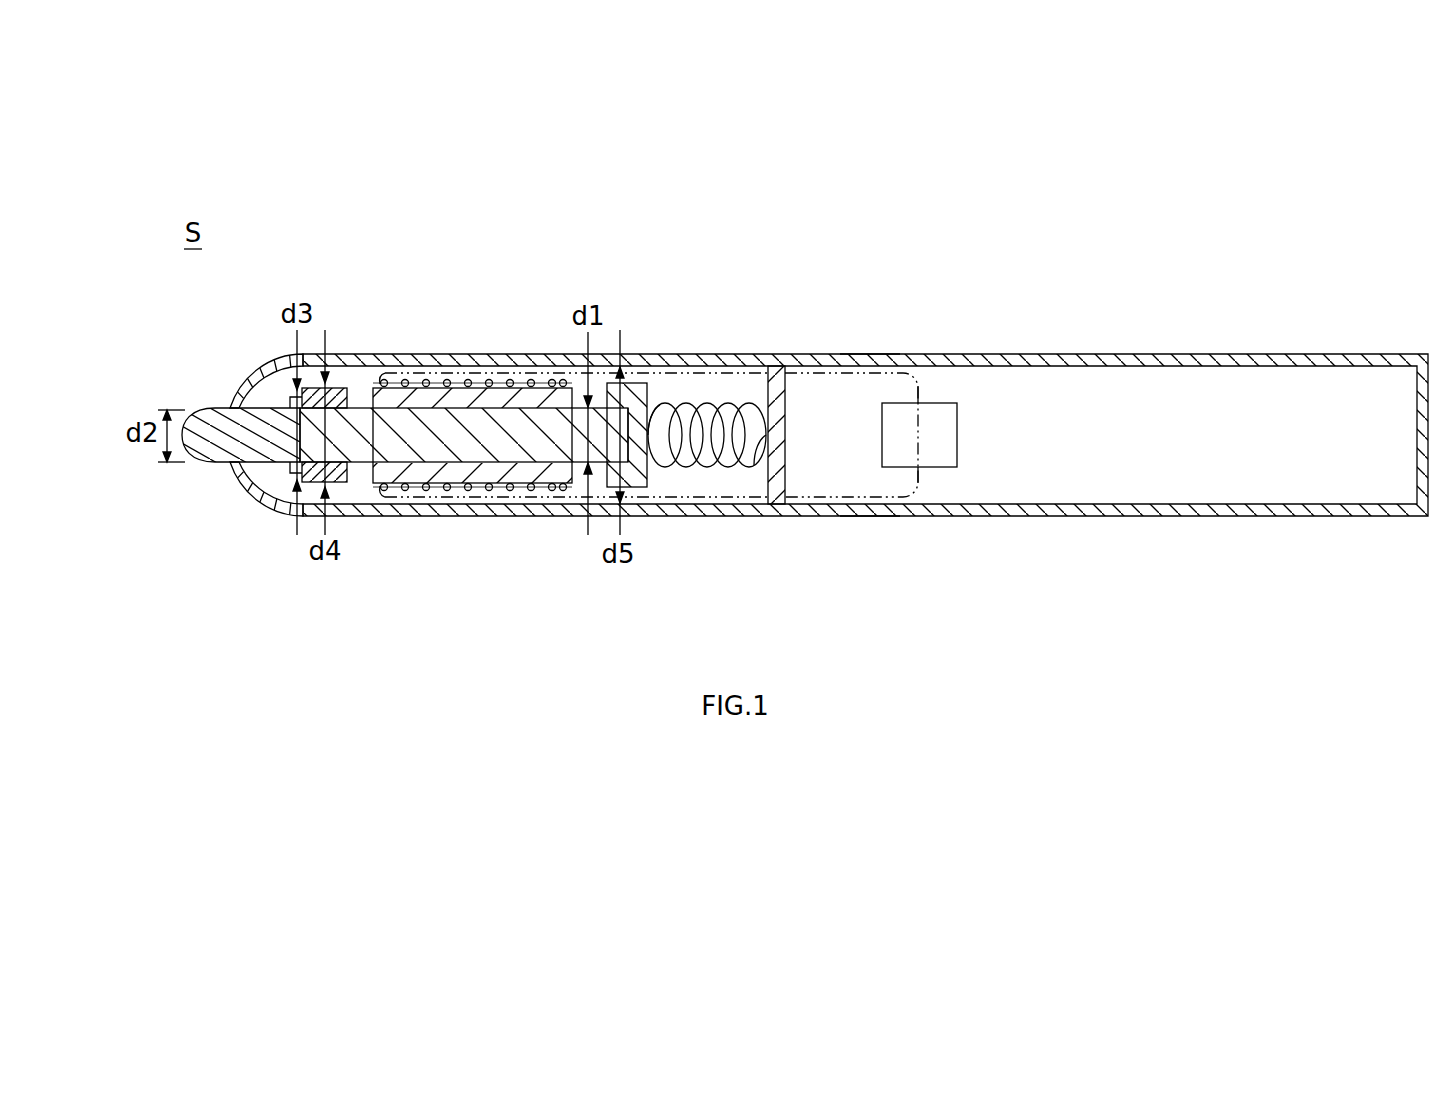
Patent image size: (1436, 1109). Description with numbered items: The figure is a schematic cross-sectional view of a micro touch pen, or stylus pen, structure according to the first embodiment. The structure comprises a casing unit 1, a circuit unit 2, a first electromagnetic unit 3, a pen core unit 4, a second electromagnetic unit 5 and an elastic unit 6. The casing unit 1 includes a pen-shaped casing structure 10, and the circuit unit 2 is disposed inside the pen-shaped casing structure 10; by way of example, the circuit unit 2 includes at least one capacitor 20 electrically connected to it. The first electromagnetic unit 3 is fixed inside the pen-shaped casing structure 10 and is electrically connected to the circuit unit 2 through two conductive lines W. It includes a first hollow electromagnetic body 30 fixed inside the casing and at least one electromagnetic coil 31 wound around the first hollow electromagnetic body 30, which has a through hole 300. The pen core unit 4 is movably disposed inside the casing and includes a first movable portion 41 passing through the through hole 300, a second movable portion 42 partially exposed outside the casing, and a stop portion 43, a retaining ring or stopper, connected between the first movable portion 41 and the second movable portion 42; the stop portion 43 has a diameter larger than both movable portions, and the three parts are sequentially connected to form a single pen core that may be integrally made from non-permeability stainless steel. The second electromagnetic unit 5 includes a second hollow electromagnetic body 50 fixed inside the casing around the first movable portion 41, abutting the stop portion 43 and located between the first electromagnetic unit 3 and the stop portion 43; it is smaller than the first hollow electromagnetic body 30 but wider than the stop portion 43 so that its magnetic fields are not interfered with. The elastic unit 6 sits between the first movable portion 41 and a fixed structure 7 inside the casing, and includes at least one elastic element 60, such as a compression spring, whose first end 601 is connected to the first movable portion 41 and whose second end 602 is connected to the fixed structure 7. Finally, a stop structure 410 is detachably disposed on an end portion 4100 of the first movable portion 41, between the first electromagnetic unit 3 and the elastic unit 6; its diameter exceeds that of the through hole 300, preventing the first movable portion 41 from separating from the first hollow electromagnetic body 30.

The casing unit 1 is at (1228, 272).
The pen-shaped casing structure 10 is at (1212, 362).
The circuit unit 2 is at (727, 435).
The capacitor 20 is at (1010, 433).
The first electromagnetic unit 3 is at (472, 280).
The first hollow electromagnetic body 30 is at (465, 393).
The electromagnetic coil 31 is at (517, 388).
The through hole 300 is at (396, 381).
The pen core unit 4 is at (188, 590).
The first movable portion 41 is at (285, 452).
The second movable portion 42 is at (253, 437).
The stop portion 43 is at (296, 474).
The stop structure 410 is at (641, 395).
The end portion 4100 is at (613, 442).
The second electromagnetic unit 5 is at (340, 280).
The second hollow electromagnetic body 50 is at (336, 388).
The elastic unit 6 is at (720, 280).
The elastic element 60 is at (700, 404).
The first end 601 is at (652, 446).
The second end 602 is at (765, 446).
The fixed structure 7 is at (789, 391).
The conductive lines W is at (872, 366).